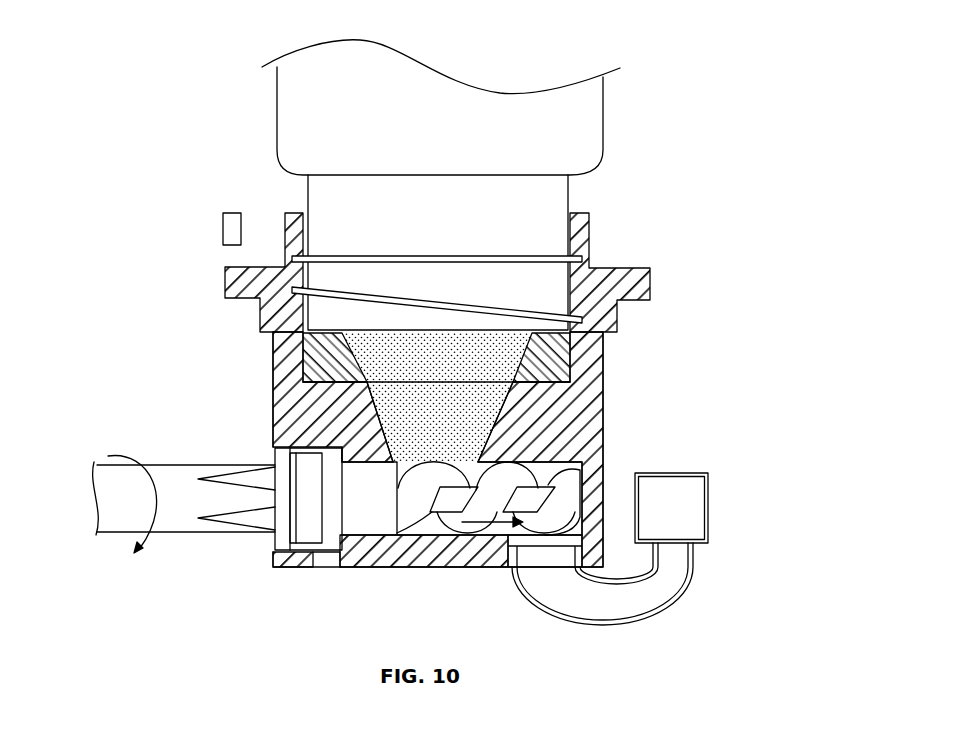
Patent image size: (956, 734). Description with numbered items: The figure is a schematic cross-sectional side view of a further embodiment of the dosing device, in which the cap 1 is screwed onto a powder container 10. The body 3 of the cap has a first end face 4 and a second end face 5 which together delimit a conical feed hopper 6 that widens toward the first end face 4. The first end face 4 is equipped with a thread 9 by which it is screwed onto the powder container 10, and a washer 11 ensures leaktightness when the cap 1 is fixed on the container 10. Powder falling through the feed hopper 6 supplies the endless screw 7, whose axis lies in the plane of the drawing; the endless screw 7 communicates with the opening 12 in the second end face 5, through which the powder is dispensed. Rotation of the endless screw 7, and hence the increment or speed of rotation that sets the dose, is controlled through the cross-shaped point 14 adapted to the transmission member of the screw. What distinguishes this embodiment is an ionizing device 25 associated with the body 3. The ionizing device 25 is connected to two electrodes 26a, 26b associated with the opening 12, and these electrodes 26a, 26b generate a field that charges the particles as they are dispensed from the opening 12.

The cap 1 is at (440, 390).
The body 3 is at (607, 405).
The first end face 4 is at (615, 268).
The second end face 5 is at (383, 570).
The conical feed hopper 6 is at (305, 375).
The endless screw 7 is at (560, 497).
The thread 9 is at (318, 283).
The powder container 10 is at (605, 110).
The washer 11 is at (318, 356).
The opening 12 is at (547, 558).
The cross-shaped point 14 is at (117, 522).
The ionizing device 25 is at (712, 505).
The electrode 26a is at (615, 583).
The electrode 26b is at (507, 580).